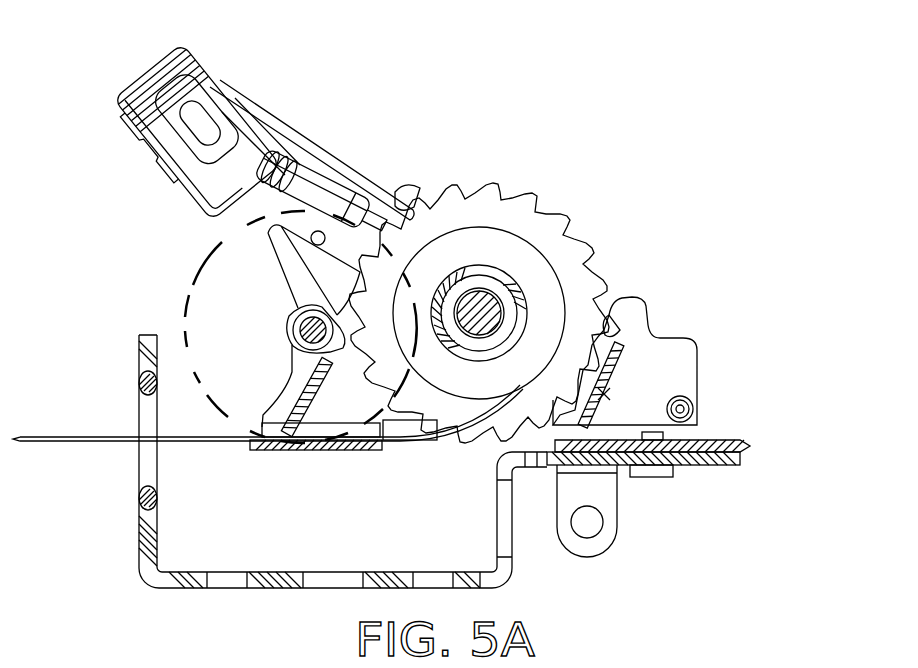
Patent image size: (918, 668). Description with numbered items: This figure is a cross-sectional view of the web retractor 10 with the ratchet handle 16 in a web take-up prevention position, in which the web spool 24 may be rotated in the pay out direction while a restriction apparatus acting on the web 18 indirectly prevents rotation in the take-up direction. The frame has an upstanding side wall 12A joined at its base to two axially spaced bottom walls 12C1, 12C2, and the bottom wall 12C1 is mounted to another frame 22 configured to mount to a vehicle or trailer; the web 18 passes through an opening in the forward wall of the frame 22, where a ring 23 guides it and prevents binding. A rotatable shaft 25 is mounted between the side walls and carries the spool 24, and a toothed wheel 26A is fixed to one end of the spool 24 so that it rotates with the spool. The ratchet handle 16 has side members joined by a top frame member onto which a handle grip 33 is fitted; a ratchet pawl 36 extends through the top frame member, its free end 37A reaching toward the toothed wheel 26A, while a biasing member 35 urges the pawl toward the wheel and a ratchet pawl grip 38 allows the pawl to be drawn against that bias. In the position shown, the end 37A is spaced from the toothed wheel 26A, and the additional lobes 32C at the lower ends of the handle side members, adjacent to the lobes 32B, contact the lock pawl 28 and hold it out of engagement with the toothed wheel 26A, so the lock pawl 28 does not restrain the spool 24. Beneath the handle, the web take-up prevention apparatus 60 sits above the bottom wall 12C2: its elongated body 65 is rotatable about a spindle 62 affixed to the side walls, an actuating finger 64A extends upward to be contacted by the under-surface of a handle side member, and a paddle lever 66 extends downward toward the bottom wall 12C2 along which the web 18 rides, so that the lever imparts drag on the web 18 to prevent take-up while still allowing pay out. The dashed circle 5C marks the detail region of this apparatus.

The web retractor 10 is at (668, 158).
The side wall 12A is at (682, 362).
The bottom wall 12C1 is at (752, 452).
The bottom wall 12C2 is at (372, 455).
The ratchet handle 16 is at (137, 153).
The web 18 is at (52, 436).
The frame 22 is at (515, 552).
The ring 23 is at (140, 492).
The web spool 24 is at (490, 268).
The rotatable shaft 25 is at (490, 304).
The toothed wheel 26A is at (505, 202).
The lock pawl 28 is at (622, 400).
The lobe 32B is at (607, 300).
The additional lobe 32C is at (620, 377).
The handle grip 33 is at (115, 112).
The biasing member 35 is at (213, 110).
The ratchet pawl 36 is at (257, 133).
The ratchet pawl end 37A is at (418, 193).
The ratchet pawl grip 38 is at (300, 153).
The detail region 5C is at (168, 307).
The web take-up prevention apparatus 60 is at (272, 345).
The spindle 62 is at (323, 345).
The actuating finger 64A is at (258, 244).
The body 65 is at (300, 318).
The paddle lever 66 is at (298, 396).